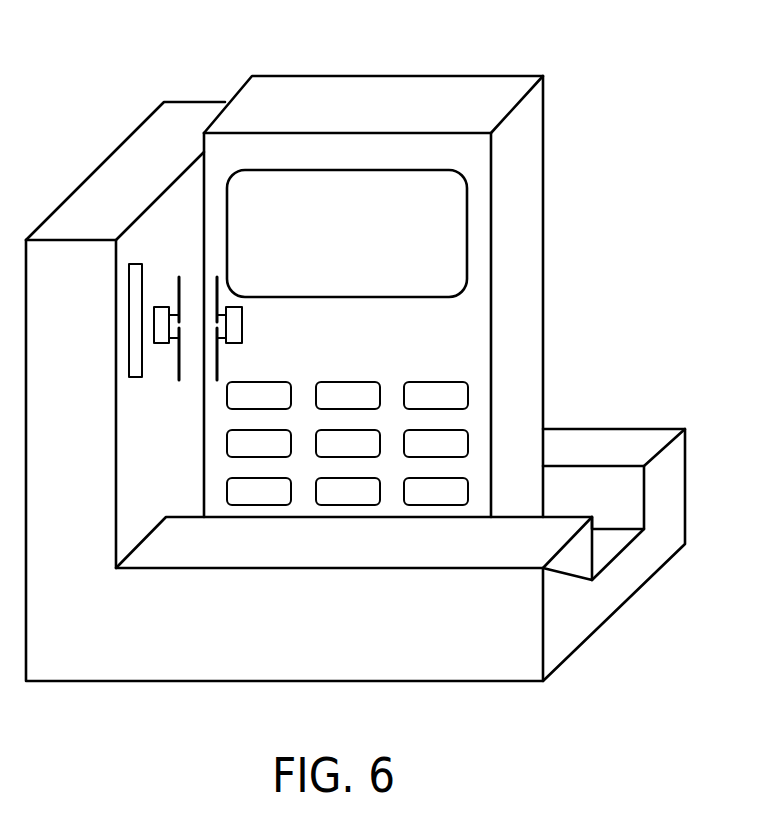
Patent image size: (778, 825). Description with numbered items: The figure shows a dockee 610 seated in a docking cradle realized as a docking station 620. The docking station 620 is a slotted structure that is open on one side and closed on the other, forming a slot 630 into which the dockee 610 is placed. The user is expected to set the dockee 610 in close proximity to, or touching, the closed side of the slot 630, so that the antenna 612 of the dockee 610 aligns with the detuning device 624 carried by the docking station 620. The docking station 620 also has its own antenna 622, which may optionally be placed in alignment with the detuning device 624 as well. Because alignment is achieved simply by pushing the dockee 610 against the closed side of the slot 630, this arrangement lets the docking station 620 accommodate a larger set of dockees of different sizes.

The dockee 610 is at (543, 76).
The antenna 612 is at (219, 350).
The docking station 620 is at (489, 681).
The antenna 622 is at (179, 380).
The detuning device 624 is at (135, 264).
The slot 630 is at (613, 488).